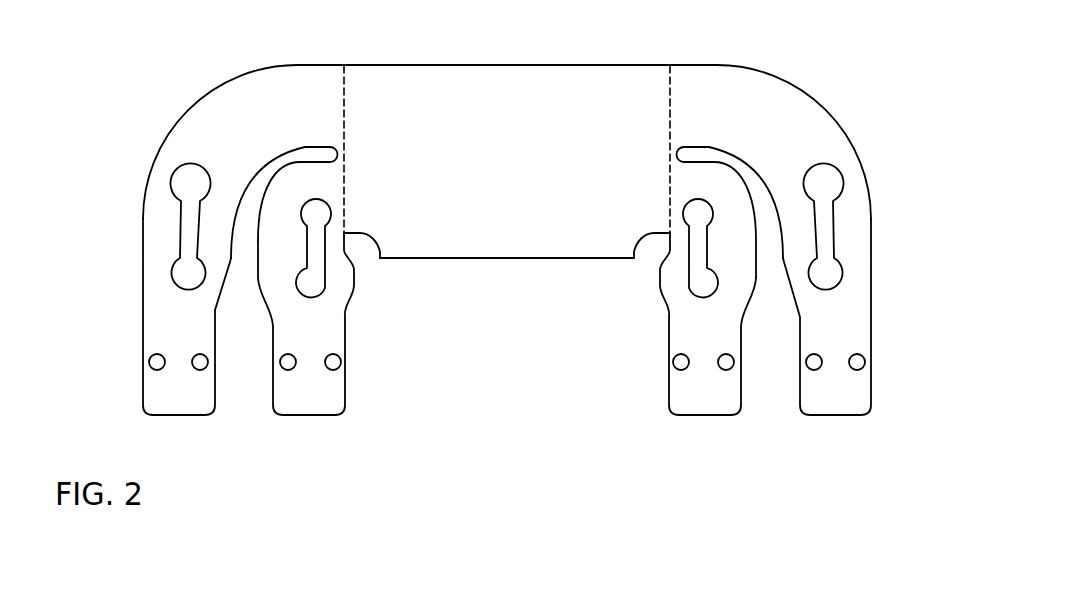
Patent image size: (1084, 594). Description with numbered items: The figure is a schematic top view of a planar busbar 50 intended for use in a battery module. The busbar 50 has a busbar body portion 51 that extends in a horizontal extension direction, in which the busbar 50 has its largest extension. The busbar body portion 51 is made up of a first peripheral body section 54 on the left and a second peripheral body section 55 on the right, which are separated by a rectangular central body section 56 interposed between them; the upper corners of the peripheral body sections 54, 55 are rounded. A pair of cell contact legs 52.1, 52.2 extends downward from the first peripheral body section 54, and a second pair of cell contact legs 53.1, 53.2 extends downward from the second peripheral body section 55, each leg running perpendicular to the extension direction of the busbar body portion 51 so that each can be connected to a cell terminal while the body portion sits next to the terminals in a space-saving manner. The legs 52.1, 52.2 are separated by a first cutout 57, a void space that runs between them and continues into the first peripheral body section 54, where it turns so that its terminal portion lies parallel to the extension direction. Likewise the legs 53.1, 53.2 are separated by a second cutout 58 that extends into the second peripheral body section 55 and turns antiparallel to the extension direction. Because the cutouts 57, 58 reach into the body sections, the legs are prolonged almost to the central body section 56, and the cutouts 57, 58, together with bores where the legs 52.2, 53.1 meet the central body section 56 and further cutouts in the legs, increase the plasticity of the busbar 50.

The busbar 50 is at (856, 101).
The busbar body portion 51 is at (614, 70).
The cell contact leg 52.1 is at (170, 383).
The cell contact leg 52.2 is at (317, 385).
The cell contact leg 53.1 is at (702, 392).
The cell contact leg 53.2 is at (845, 387).
The first peripheral body section 54 is at (250, 110).
The second peripheral body section 55 is at (757, 104).
The central body section 56 is at (430, 95).
The first cutout 57 is at (252, 322).
The second cutout 58 is at (773, 317).